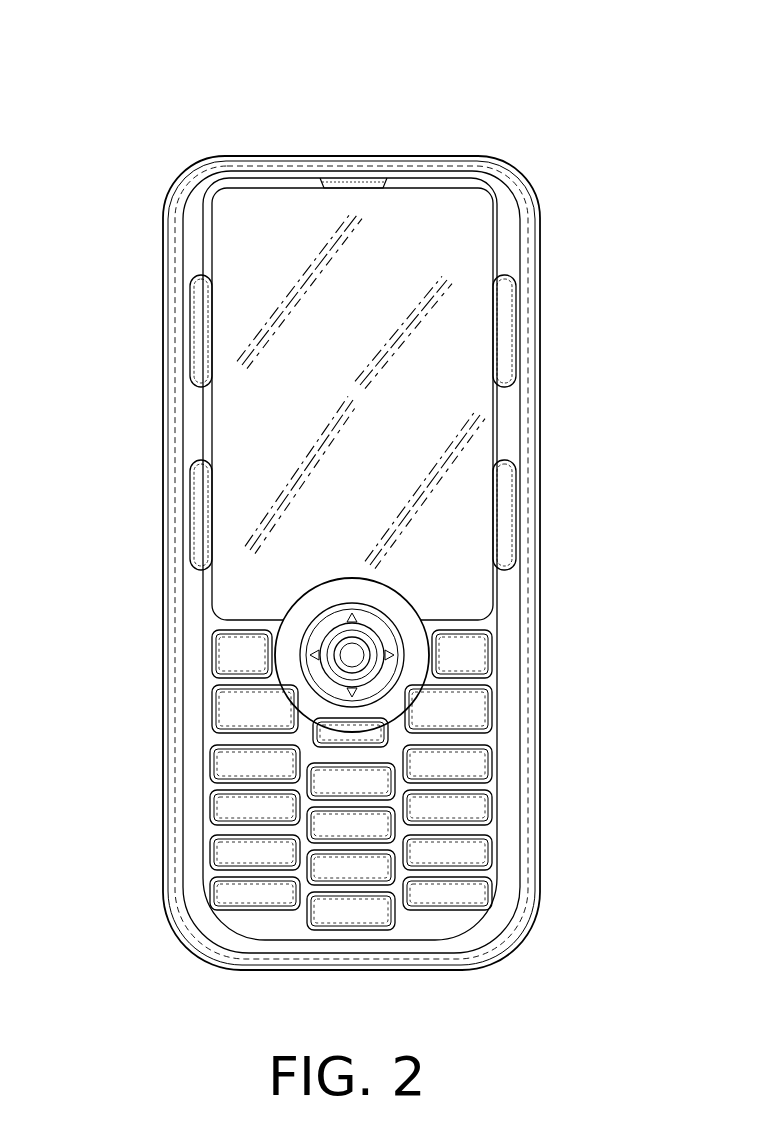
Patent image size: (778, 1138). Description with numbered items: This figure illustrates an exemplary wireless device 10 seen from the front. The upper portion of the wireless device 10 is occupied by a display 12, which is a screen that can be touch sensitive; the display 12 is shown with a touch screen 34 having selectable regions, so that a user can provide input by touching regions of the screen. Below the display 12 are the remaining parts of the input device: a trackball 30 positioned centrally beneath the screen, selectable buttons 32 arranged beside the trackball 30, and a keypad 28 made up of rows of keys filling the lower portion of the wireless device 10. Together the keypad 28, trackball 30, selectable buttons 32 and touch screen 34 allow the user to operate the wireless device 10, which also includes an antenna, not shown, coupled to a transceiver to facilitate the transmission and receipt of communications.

The wireless device 10 is at (203, 92).
The display 12 is at (463, 272).
The touch screen 34 is at (458, 450).
The trackball 30 is at (368, 656).
The selectable buttons 32 is at (225, 654).
The keypad 28 is at (480, 767).